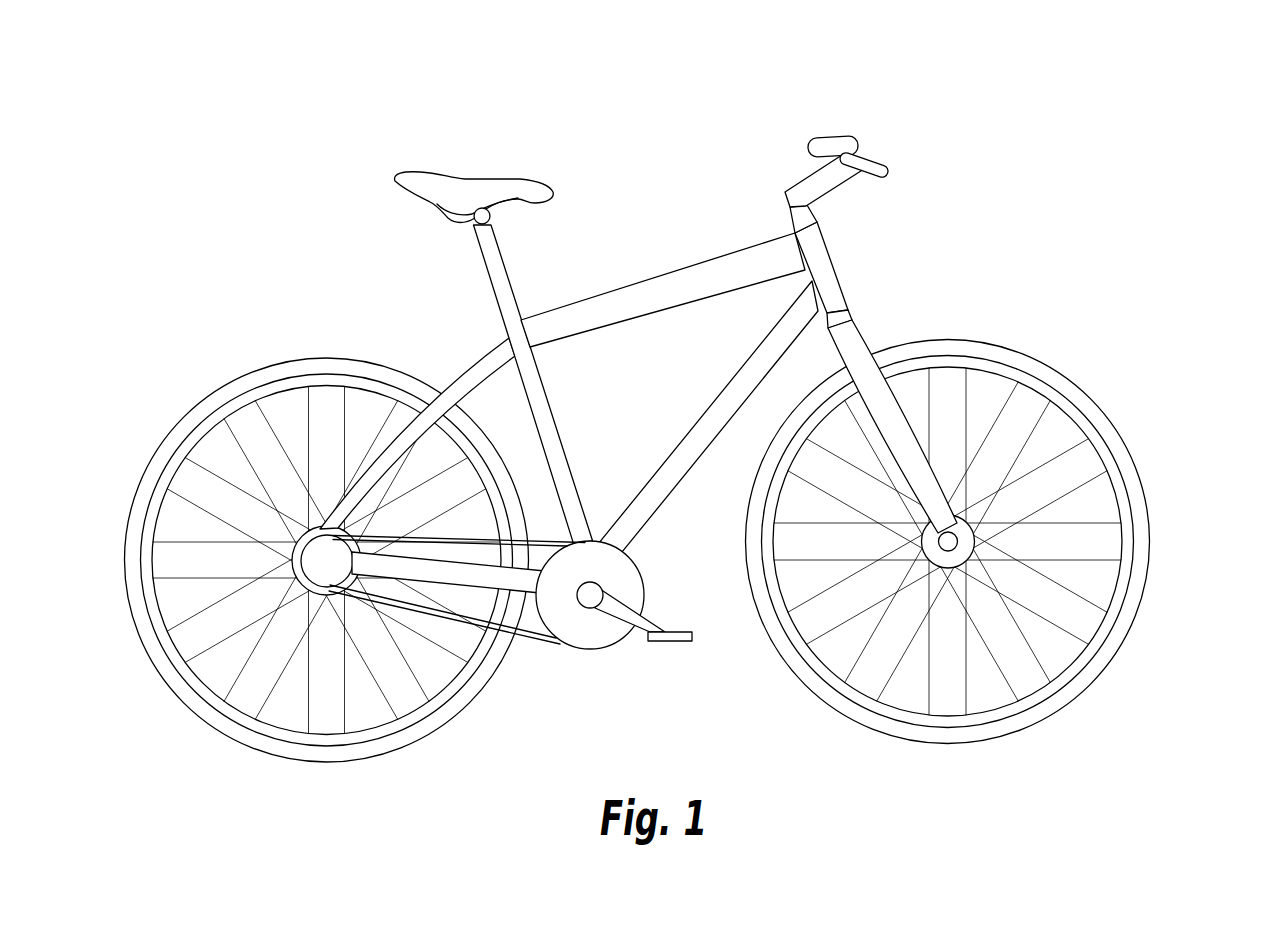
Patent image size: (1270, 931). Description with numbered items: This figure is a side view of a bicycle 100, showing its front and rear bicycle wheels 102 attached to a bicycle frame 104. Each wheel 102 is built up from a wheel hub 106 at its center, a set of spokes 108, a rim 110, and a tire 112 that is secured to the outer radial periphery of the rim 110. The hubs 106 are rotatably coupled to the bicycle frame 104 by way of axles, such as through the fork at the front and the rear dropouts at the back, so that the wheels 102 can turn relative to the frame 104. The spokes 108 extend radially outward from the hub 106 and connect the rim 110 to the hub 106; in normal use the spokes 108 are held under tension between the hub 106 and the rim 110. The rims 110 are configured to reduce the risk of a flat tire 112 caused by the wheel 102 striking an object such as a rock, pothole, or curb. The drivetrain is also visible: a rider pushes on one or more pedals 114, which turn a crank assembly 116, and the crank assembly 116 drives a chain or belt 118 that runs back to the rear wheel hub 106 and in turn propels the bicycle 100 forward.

The bicycle 100 is at (674, 433).
The bicycle wheel 102 is at (674, 551).
The bicycle frame 104 is at (815, 247).
The wheel hub 106 is at (340, 592).
The spoke 108 is at (455, 648).
The rim 110 is at (430, 728).
The tire 112 is at (227, 723).
The pedal 114 is at (673, 641).
The crank assembly 116 is at (613, 568).
The chain or belt 118 is at (531, 563).